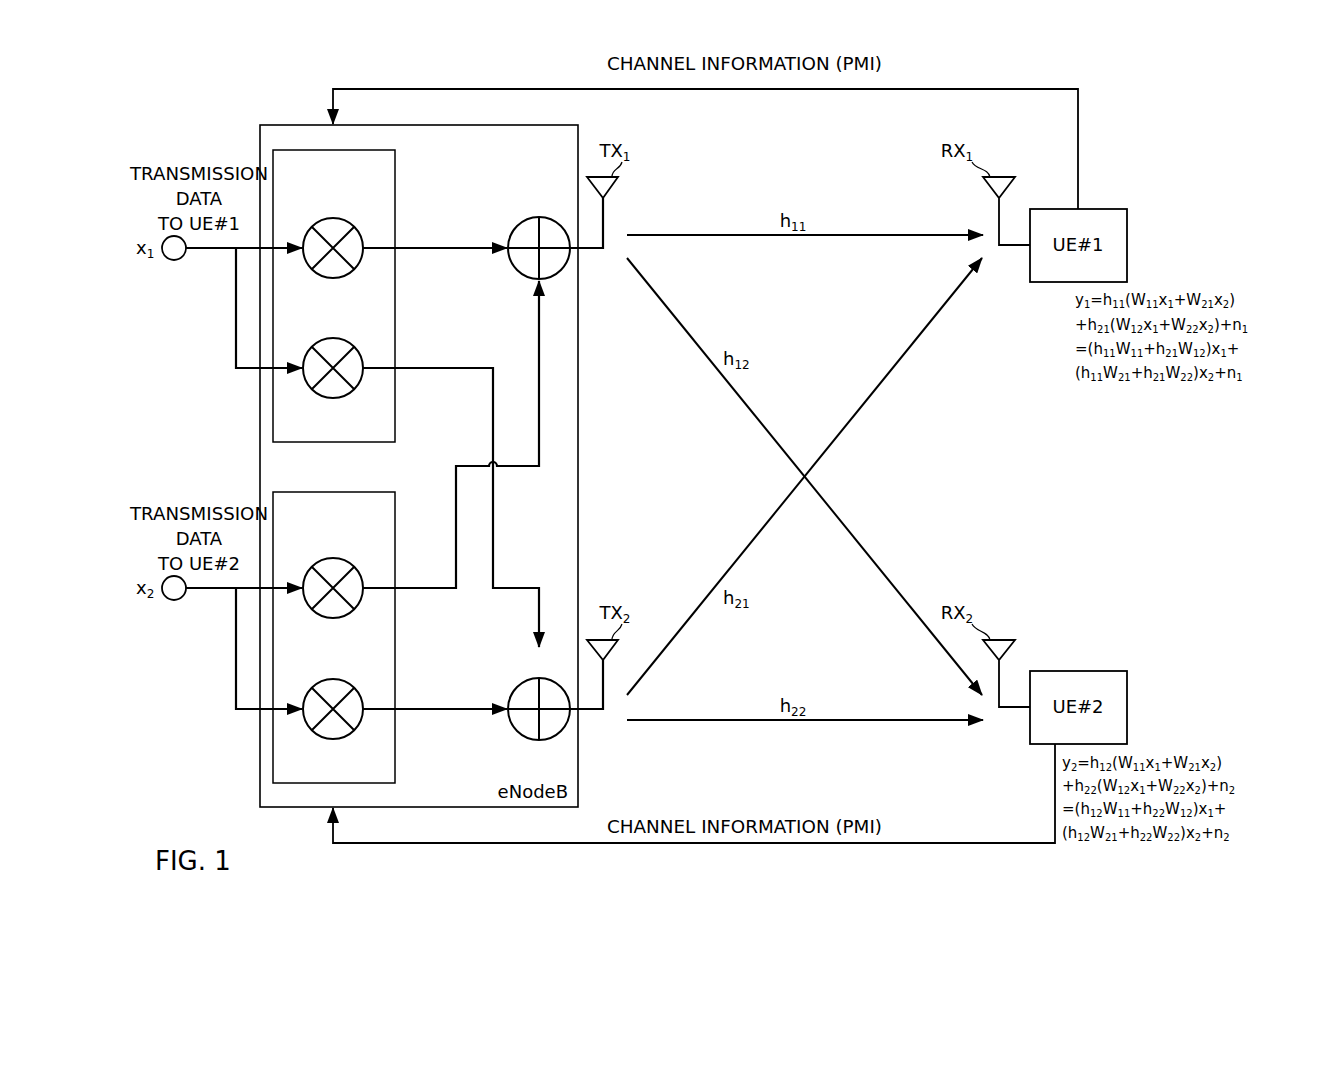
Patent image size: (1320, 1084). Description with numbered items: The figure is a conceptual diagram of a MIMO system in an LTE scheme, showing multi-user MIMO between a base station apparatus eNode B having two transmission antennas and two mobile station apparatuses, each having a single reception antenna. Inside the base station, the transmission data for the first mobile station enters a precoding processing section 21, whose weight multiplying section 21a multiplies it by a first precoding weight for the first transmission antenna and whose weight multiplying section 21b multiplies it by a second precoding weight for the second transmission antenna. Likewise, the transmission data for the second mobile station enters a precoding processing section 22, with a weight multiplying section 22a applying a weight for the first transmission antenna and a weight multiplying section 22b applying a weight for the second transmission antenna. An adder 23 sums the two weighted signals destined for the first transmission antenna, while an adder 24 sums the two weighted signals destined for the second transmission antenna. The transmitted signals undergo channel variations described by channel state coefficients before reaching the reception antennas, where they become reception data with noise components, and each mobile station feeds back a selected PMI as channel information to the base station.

The precoding processing section 21 is at (395, 288).
The weight multiplying section 21a is at (345, 218).
The weight multiplying section 21b is at (345, 338).
The precoding processing section 22 is at (395, 657).
The weight multiplying section 22a is at (345, 558).
The weight multiplying section 22b is at (345, 679).
The adder 23 is at (516, 218).
The adder 24 is at (516, 680).